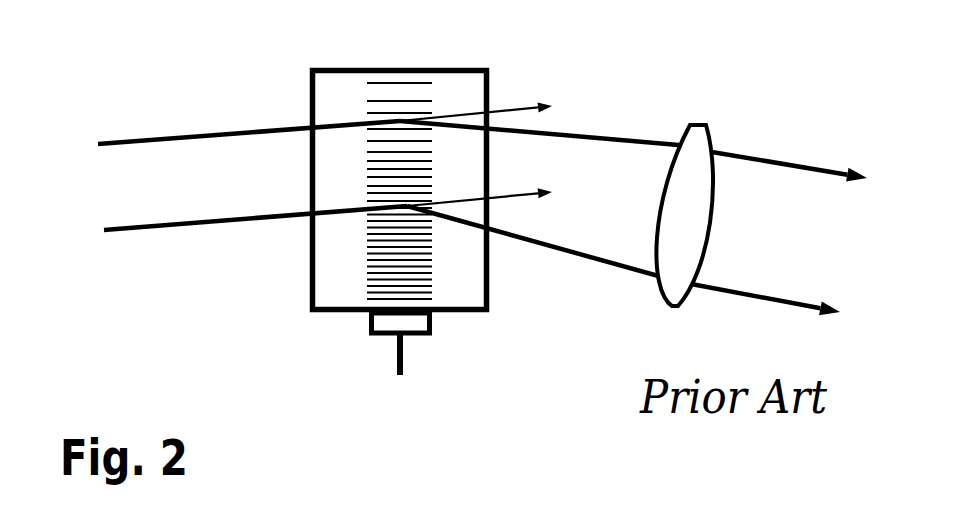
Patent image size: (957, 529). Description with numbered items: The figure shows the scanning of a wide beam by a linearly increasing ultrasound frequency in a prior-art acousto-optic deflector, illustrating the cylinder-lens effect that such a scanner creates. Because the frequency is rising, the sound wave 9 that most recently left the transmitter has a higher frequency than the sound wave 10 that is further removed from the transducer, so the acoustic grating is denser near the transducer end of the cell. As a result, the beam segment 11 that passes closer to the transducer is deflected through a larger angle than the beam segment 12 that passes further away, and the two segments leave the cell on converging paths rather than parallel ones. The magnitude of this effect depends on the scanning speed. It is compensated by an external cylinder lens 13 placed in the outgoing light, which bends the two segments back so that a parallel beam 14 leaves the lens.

The sound wave 9 is at (425, 280).
The sound wave 10 is at (383, 92).
The beam segment 11 is at (392, 235).
The beam segment 12 is at (394, 122).
The external cylinder lens 13 is at (696, 128).
The parallel beam 14 is at (768, 217).